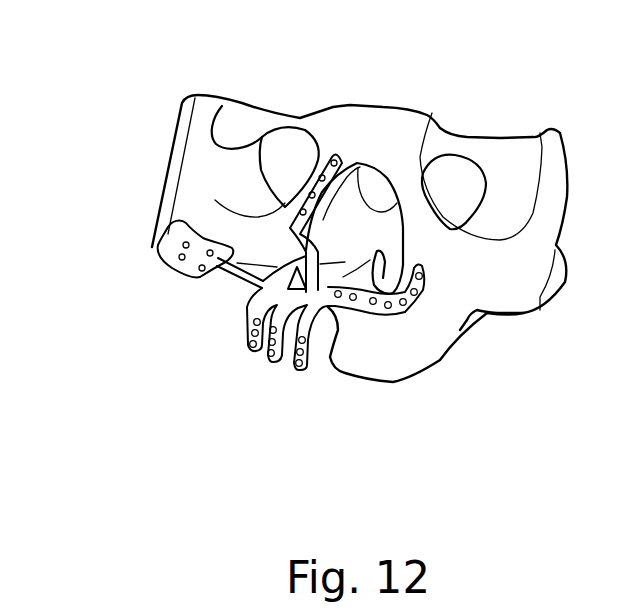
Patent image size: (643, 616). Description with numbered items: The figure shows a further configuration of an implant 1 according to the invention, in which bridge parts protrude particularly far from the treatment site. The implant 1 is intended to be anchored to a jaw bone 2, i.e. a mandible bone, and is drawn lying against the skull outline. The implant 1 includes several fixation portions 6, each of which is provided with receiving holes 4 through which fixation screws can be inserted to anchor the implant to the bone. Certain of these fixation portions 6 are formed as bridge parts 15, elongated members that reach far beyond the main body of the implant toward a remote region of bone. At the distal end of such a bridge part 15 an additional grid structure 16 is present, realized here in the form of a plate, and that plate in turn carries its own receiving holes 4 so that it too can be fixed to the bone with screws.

The implant 1 is at (390, 285).
The jaw bone 2 is at (400, 347).
The receiving holes 4 is at (177, 240).
The fixation portions 6 is at (346, 243).
The bridge part 15 is at (306, 232).
The additional grid structure 16 is at (168, 289).